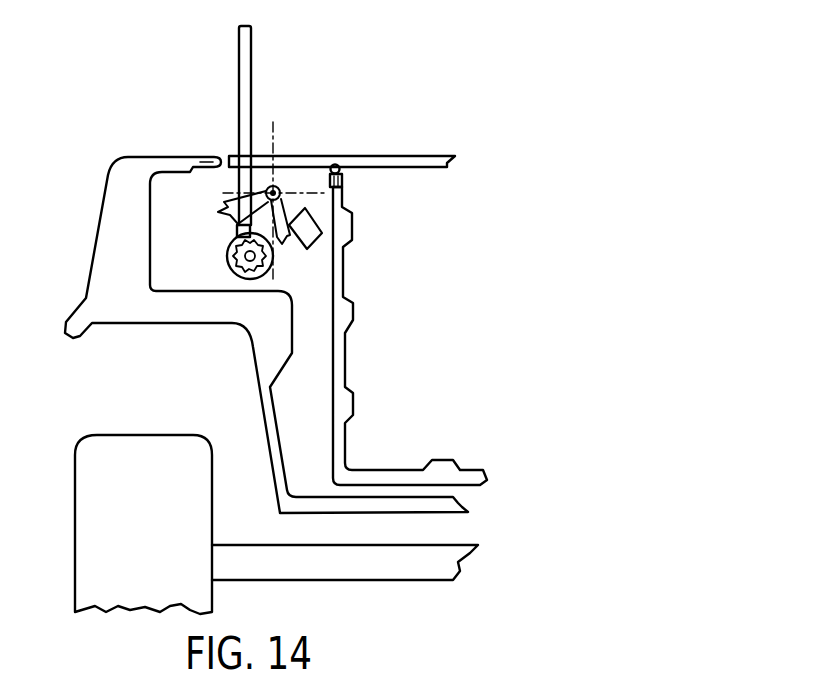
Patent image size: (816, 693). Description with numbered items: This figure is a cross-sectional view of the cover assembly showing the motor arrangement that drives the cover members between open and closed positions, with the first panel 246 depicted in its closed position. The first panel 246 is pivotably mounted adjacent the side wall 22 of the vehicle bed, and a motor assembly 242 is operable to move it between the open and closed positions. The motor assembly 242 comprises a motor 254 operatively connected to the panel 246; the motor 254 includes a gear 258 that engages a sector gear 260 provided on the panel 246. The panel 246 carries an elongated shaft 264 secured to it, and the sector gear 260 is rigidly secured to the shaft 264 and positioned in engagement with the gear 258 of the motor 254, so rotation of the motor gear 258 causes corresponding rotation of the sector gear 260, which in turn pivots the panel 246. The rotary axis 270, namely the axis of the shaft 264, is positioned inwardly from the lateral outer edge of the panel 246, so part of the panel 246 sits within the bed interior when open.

The side wall 22 is at (118, 238).
The first panel 246 is at (397, 157).
The motor assembly 242 is at (312, 215).
The motor 254 is at (298, 240).
The elongated shaft 264 is at (276, 188).
The sector gear 260 is at (222, 195).
The gear 258 is at (247, 277).
The rotary axis 270 is at (237, 222).